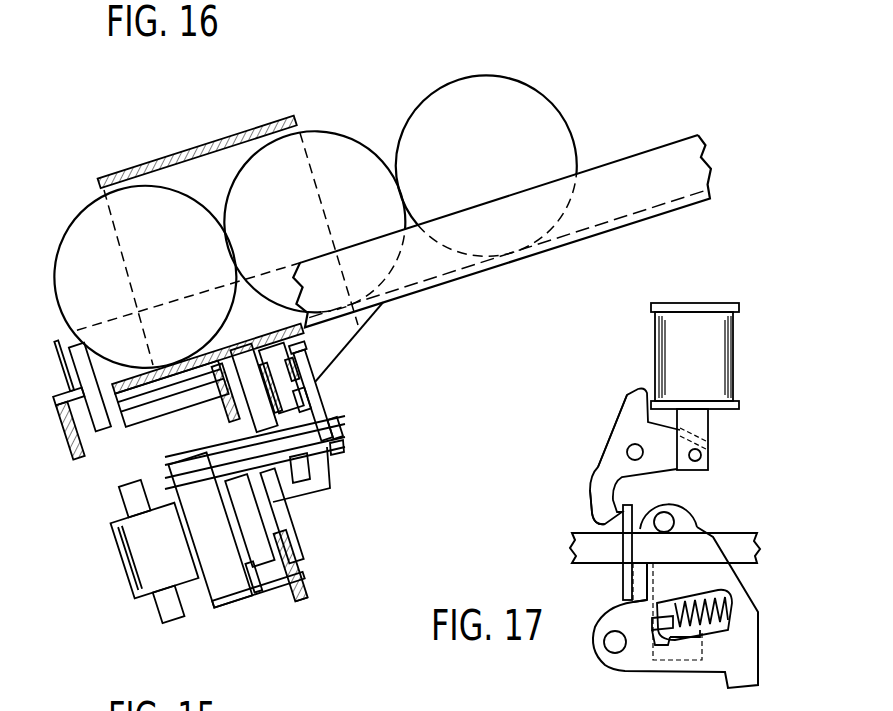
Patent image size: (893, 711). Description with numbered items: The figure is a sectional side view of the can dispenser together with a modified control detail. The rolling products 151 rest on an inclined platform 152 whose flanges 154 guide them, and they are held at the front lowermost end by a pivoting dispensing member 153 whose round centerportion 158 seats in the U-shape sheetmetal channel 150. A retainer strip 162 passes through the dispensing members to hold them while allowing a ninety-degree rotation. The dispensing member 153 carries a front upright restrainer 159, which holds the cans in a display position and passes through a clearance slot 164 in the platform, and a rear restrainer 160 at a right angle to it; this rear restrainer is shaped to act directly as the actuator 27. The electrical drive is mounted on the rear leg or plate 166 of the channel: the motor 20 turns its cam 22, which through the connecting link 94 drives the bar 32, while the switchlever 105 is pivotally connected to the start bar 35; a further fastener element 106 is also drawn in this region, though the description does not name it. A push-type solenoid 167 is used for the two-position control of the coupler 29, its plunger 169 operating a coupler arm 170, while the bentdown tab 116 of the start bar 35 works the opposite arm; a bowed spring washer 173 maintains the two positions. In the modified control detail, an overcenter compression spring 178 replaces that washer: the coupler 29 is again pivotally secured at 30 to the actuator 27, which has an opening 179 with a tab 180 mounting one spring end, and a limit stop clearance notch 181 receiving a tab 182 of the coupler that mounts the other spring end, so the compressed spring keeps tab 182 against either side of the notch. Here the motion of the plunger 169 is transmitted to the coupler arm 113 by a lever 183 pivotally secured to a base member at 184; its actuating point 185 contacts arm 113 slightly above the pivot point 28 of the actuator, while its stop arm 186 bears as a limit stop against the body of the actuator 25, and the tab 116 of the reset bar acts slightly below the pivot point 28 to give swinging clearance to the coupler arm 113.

In FIG. 16, the rolling products 151 is at (482, 167).
In FIG. 16, the flanges 154 is at (632, 151).
In FIG. 16, the inclined plane or platform 152 is at (652, 223).
In FIG. 16, the round centerportion 158 is at (203, 143).
In FIG. 16, the retainer strip 162 is at (173, 362).
In FIG. 16, the front upright restrainer 159 is at (78, 368).
In FIG. 16, the clearance slot 164 is at (78, 397).
In FIG. 16, the pivoting dispensing member 153 is at (109, 446).
In FIG. 16, the bar 32 is at (222, 402).
In FIG. 16, the rear restrainer 160 is at (237, 347).
In FIG. 16, the connecting link 94 is at (222, 434).
In FIG. 16, the bentdown tab 116 is at (283, 353).
In FIG. 17, the bentdown tab 116 is at (690, 512).
In FIG. 16, the start bar 35 is at (325, 388).
In FIG. 17, the start bar 35 is at (741, 536).
In FIG. 16, the bowed spring washer 173 is at (320, 412).
In FIG. 16, the nut 106 is at (336, 428).
In FIG. 16, the push-type solenoid 167 is at (300, 498).
In FIG. 16, the switchlever 105 is at (334, 456).
In FIG. 16, the coupler arm 170 is at (318, 482).
In FIG. 16, the rear leg or plate 166 is at (305, 553).
In FIG. 16, the cam 22 is at (259, 592).
In FIG. 16, the U-shape sheetmetal channel 150 is at (310, 617).
In FIG. 16, the motor 20 is at (110, 576).
In FIG. 17, the electromagnet (actuator) 25 is at (742, 362).
In FIG. 17, the plunger 169 is at (716, 443).
In FIG. 17, the stop arm 186 is at (636, 388).
In FIG. 17, the pivot 184 is at (627, 447).
In FIG. 17, the lever 183 is at (598, 466).
In FIG. 17, the actuating point 185 is at (605, 507).
In FIG. 17, the coupler arm 113 is at (629, 508).
In FIG. 17, the pivot point 28 is at (700, 524).
In FIG. 17, the actuator 27 is at (768, 656).
In FIG. 17, the coupler 29 is at (609, 607).
In FIG. 17, the pivot 30 is at (606, 652).
In FIG. 17, the overcenter compression spring 178 is at (728, 606).
In FIG. 17, the tab 180 is at (736, 617).
In FIG. 17, the tab 182 is at (660, 616).
In FIG. 17, the limit stop clearance notch 181 is at (663, 641).
In FIG. 17, the opening 179 is at (679, 640).